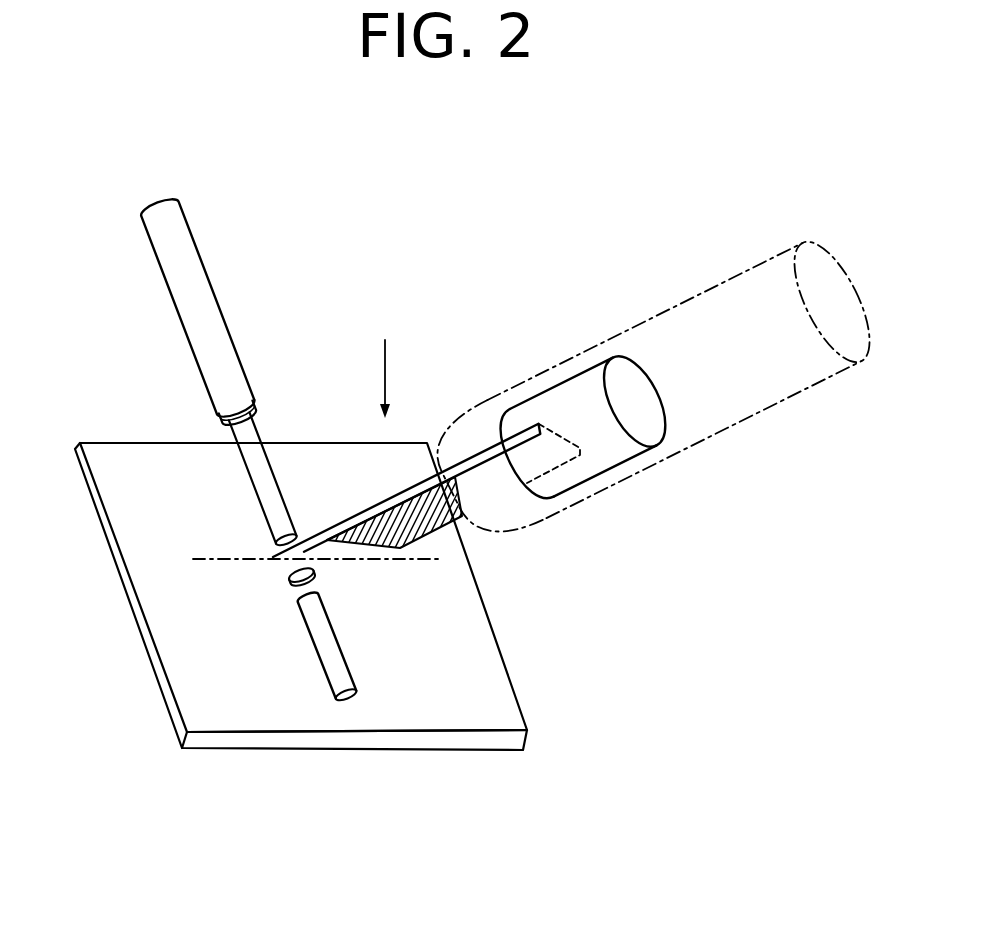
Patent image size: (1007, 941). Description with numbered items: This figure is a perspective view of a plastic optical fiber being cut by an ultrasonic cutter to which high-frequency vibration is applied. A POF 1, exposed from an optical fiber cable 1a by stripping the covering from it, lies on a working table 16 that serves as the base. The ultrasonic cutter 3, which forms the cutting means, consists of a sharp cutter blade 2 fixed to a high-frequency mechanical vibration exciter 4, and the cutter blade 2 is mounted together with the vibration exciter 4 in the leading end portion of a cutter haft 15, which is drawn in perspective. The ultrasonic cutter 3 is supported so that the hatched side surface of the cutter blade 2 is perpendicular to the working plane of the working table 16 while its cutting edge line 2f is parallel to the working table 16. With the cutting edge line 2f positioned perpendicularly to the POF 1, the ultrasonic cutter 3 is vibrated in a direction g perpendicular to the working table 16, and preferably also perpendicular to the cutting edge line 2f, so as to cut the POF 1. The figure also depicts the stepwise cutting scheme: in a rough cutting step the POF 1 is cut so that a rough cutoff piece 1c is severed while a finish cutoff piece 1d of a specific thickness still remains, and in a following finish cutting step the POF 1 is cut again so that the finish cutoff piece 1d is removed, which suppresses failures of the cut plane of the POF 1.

The POF 1 is at (267, 468).
The optical fiber cable 1a is at (207, 277).
The rough cutoff piece 1c is at (327, 657).
The finish cutoff piece 1d is at (300, 587).
The cutter blade 2 is at (426, 522).
The cutting edge line 2f is at (360, 553).
The ultrasonic cutter 3 is at (662, 218).
The high-frequency mechanical vibration exciter 4 is at (556, 404).
The cutter haft 15 is at (708, 287).
The working table 16 is at (499, 648).
The direction g is at (387, 367).